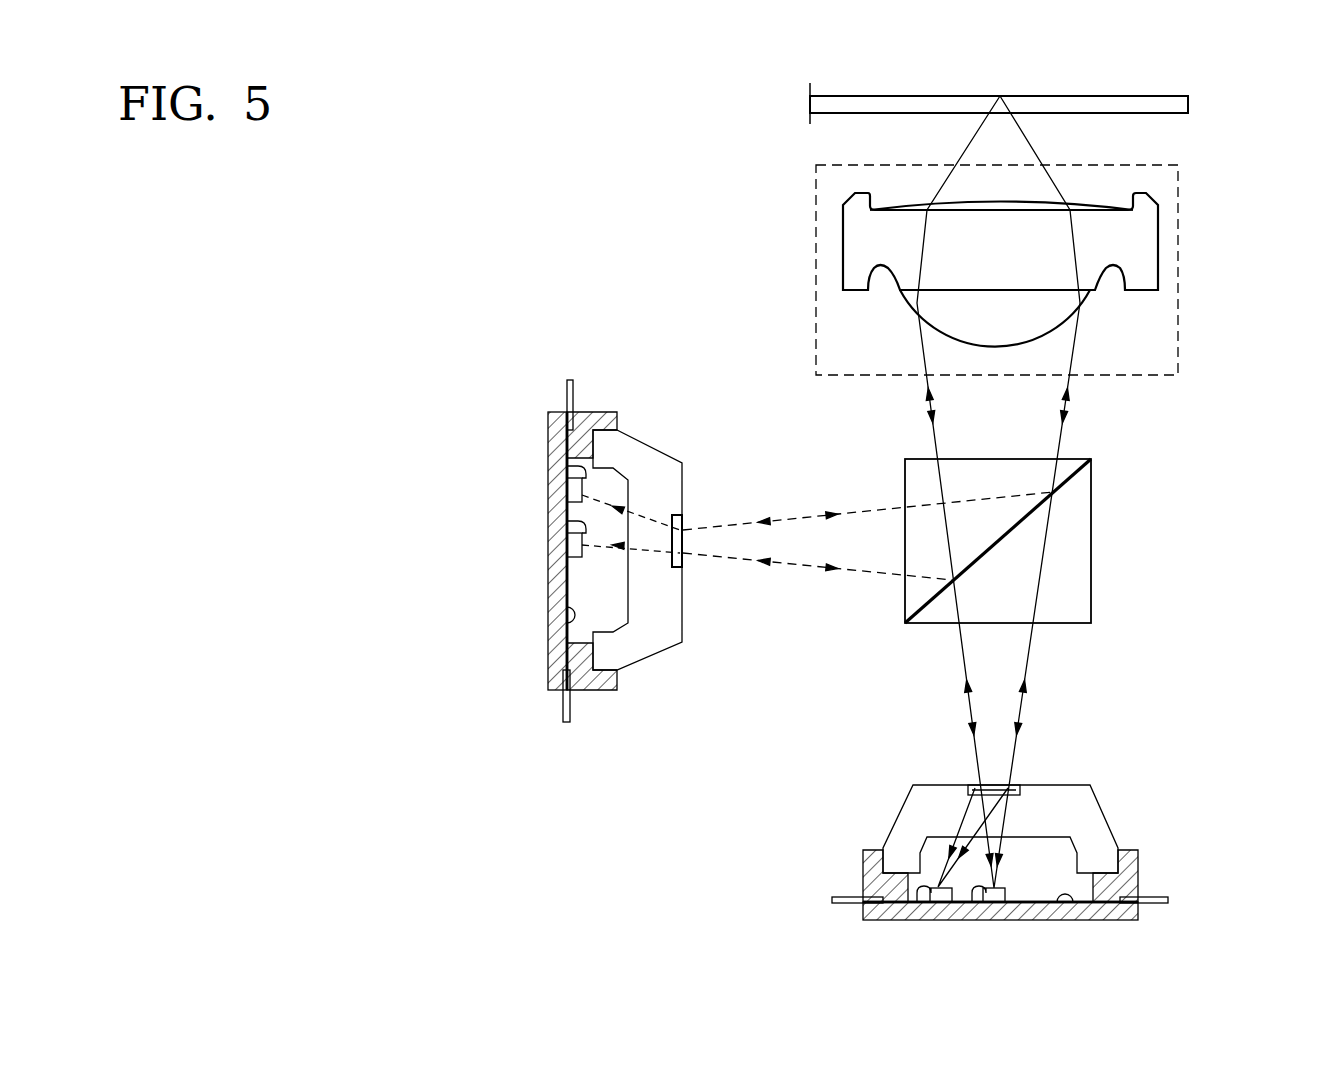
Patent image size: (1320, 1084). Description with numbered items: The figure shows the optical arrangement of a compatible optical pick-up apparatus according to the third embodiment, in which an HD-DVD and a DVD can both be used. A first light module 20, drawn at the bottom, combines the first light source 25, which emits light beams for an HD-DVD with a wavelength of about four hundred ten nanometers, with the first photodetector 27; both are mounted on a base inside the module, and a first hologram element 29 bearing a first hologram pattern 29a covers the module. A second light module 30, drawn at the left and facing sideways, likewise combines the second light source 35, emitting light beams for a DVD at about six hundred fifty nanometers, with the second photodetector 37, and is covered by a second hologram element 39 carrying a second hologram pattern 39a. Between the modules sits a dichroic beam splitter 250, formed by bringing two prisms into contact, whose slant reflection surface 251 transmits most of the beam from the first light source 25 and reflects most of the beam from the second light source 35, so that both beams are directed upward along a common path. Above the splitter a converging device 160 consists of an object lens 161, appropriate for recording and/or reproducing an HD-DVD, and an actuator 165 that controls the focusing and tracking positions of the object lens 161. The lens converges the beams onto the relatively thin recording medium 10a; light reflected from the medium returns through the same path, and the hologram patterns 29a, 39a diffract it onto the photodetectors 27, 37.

The relatively thin recording medium 10a is at (885, 105).
The converging device 160 is at (1199, 165).
The object lens 161 is at (843, 243).
The actuator 165 is at (1178, 290).
The dichroic beam splitter 250 is at (1110, 450).
The slant reflection surface 251 is at (1080, 476).
The second light module 30 is at (588, 393).
The first light module 20 is at (844, 885).
The first light source 25 is at (1017, 905).
The first photodetector 27 is at (938, 899).
The first hologram element 29 is at (929, 774).
The first hologram pattern 29a is at (1017, 784).
The second light source 35 is at (563, 548).
The second photodetector 37 is at (570, 483).
The second hologram element 39 is at (695, 633).
The second hologram pattern 39a is at (681, 545).